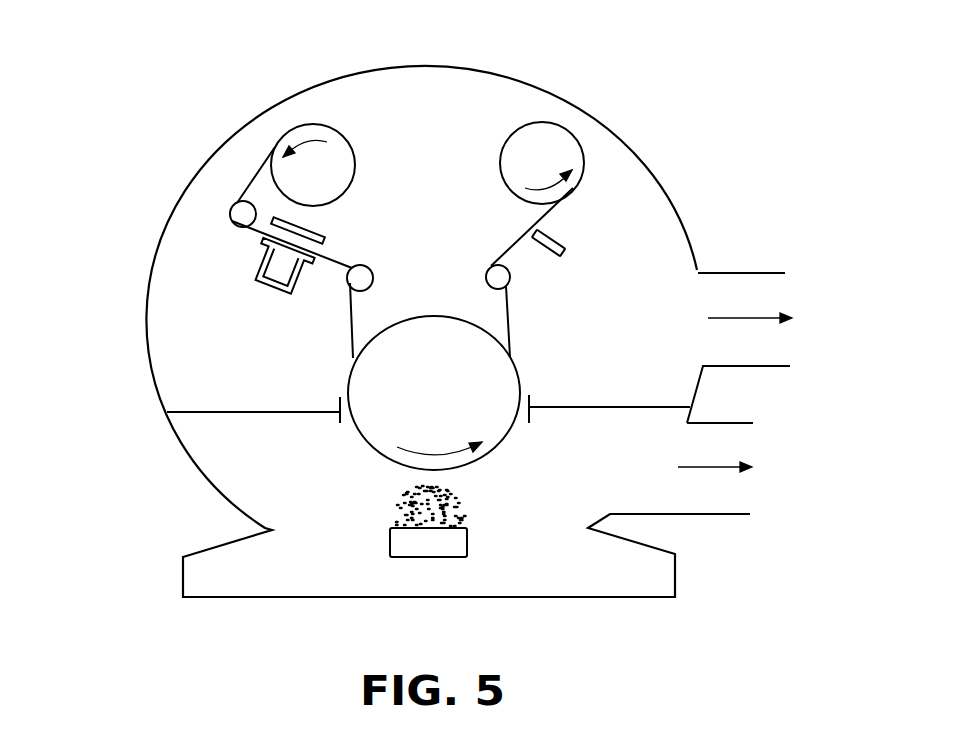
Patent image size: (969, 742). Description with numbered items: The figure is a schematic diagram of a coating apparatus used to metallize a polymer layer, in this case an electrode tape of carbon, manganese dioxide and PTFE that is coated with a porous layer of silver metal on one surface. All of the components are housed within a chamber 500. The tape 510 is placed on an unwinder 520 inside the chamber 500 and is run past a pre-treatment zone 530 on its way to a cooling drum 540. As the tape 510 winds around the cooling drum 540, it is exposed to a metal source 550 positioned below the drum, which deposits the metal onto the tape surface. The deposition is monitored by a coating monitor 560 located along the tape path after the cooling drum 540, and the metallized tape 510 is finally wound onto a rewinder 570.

The chamber 500 is at (133, 360).
The tape 510 is at (237, 176).
The unwinder 520 is at (302, 112).
The pre-treatment zone 530 is at (228, 250).
The cooling drum 540 is at (343, 435).
The metal source 550 is at (439, 565).
The coating monitor 560 is at (568, 228).
The rewinder 570 is at (582, 132).